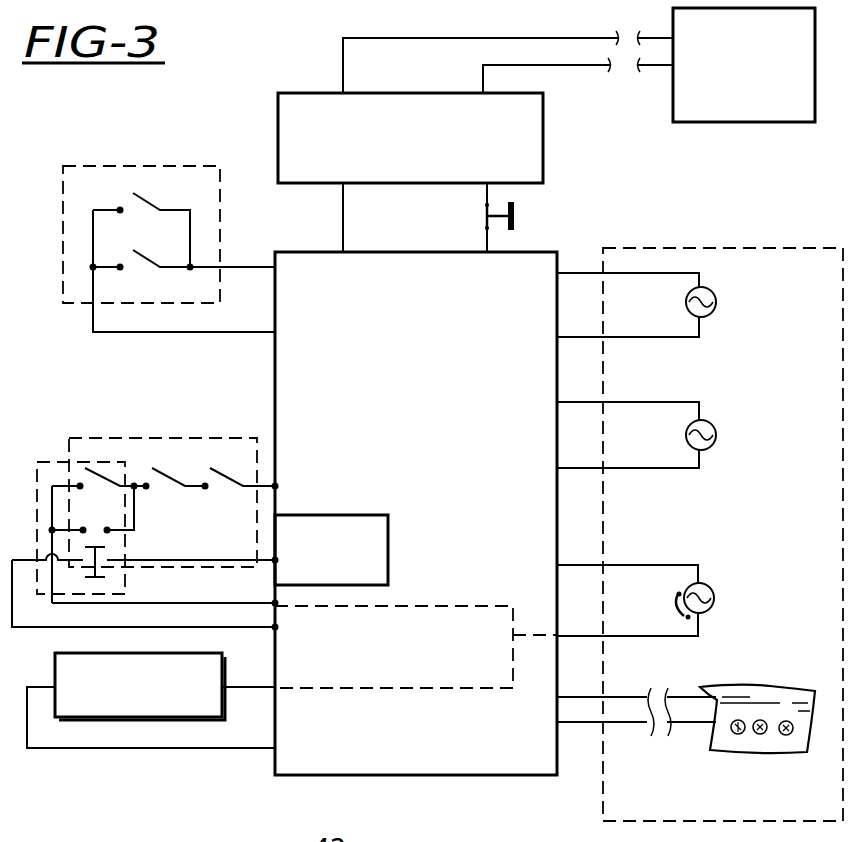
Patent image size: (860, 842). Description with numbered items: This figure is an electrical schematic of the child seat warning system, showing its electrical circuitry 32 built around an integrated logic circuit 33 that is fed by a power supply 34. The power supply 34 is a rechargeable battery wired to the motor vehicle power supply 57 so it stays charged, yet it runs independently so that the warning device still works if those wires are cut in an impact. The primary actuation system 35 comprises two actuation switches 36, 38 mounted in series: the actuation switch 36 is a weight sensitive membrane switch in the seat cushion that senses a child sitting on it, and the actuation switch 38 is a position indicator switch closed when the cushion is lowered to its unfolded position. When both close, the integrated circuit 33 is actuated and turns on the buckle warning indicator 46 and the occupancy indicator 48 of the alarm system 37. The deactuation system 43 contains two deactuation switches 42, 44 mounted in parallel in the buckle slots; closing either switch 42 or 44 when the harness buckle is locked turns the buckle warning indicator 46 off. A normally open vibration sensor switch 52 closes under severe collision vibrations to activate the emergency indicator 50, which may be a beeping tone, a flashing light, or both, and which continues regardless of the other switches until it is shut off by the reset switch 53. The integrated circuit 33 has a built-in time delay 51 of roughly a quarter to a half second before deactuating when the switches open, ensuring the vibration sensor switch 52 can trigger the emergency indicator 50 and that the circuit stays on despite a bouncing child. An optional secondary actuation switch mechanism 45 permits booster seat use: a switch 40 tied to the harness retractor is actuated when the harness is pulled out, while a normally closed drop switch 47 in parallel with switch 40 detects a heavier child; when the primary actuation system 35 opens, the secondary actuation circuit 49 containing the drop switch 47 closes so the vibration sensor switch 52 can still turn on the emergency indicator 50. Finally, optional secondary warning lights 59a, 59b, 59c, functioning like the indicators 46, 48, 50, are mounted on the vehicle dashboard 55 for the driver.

The electrical circuitry 32 is at (594, 186).
The integrated logic circuit 33 is at (548, 262).
The power supply 34 is at (537, 143).
The actuation system 35 is at (55, 483).
The actuation switch 36 is at (228, 480).
The alarm system 37 is at (706, 247).
The actuation switch 38 is at (172, 484).
The switch 40 is at (105, 478).
The deactuation switch 42 is at (155, 193).
The deactuation system 43 is at (108, 164).
The deactuation switch 44 is at (150, 258).
The secondary actuation switch mechanism 45 is at (38, 490).
The buckle warning indicator 46 is at (716, 301).
The drop switch 47 is at (163, 502).
The occupancy indicator 48 is at (716, 434).
The secondary actuation circuit 49 is at (61, 628).
The emergency indicator 50 is at (712, 592).
The time delay 51 is at (388, 566).
The vibration sensor switch 52 is at (208, 718).
The reset switch 53 is at (518, 220).
The vehicle dashboard 55 is at (776, 692).
The motor vehicle power supply 57 is at (733, 122).
The secondary warning light 59a is at (738, 735).
The secondary warning light 59b is at (760, 735).
The secondary warning light 59c is at (786, 736).